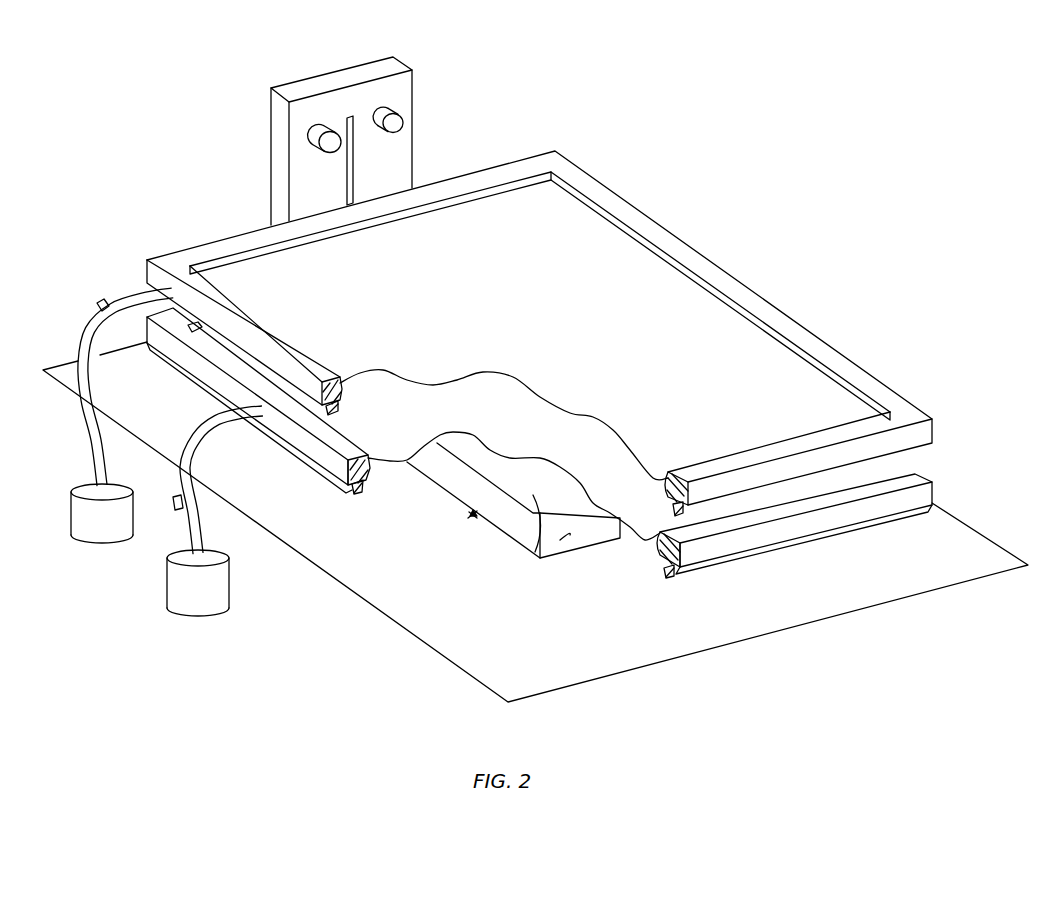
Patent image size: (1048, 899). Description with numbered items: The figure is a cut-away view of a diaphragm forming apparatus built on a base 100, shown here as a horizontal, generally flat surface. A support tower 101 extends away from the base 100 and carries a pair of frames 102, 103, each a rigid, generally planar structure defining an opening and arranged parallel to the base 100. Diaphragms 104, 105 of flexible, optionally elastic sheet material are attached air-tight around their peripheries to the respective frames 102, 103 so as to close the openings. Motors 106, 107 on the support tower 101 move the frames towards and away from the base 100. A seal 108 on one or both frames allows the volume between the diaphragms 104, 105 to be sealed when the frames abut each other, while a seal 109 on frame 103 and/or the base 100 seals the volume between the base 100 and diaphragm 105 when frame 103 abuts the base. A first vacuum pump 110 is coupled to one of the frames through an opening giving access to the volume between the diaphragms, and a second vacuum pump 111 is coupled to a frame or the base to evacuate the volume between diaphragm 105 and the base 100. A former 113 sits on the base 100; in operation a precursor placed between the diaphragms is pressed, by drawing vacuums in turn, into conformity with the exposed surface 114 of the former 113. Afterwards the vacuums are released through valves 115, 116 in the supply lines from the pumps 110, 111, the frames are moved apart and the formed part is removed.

The base 100 is at (830, 605).
The support tower 101 is at (334, 68).
The frame 102 is at (877, 392).
The frame 103 is at (913, 472).
The diaphragm 104 is at (643, 296).
The diaphragm 105 is at (465, 417).
The motor 106 is at (316, 140).
The motor 107 is at (398, 122).
The seal 108 is at (341, 409).
The seal 109 is at (360, 496).
The first vacuum pump 110 is at (103, 546).
The second vacuum pump 111 is at (200, 618).
The former 113 is at (472, 516).
The exposed surface 114 is at (568, 537).
The valve 115 is at (100, 303).
The valve 116 is at (178, 512).